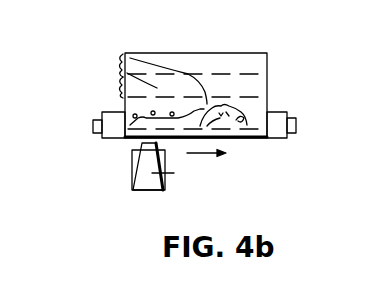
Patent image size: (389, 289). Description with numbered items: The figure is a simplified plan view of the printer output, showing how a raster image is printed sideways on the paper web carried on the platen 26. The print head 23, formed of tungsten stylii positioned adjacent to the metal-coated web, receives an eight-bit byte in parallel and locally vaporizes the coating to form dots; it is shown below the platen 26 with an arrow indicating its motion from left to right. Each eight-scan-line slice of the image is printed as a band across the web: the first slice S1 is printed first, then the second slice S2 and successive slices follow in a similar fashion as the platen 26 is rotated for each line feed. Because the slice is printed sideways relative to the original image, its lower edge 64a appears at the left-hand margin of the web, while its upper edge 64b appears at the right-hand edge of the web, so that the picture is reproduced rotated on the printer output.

The lower edge of slice 64a is at (125, 53).
The upper edge of slice 64b is at (267, 60).
The platen 26 is at (113, 131).
The print head 23 is at (147, 185).
The first slice S1 is at (105, 64).
The second slice S2 is at (105, 86).